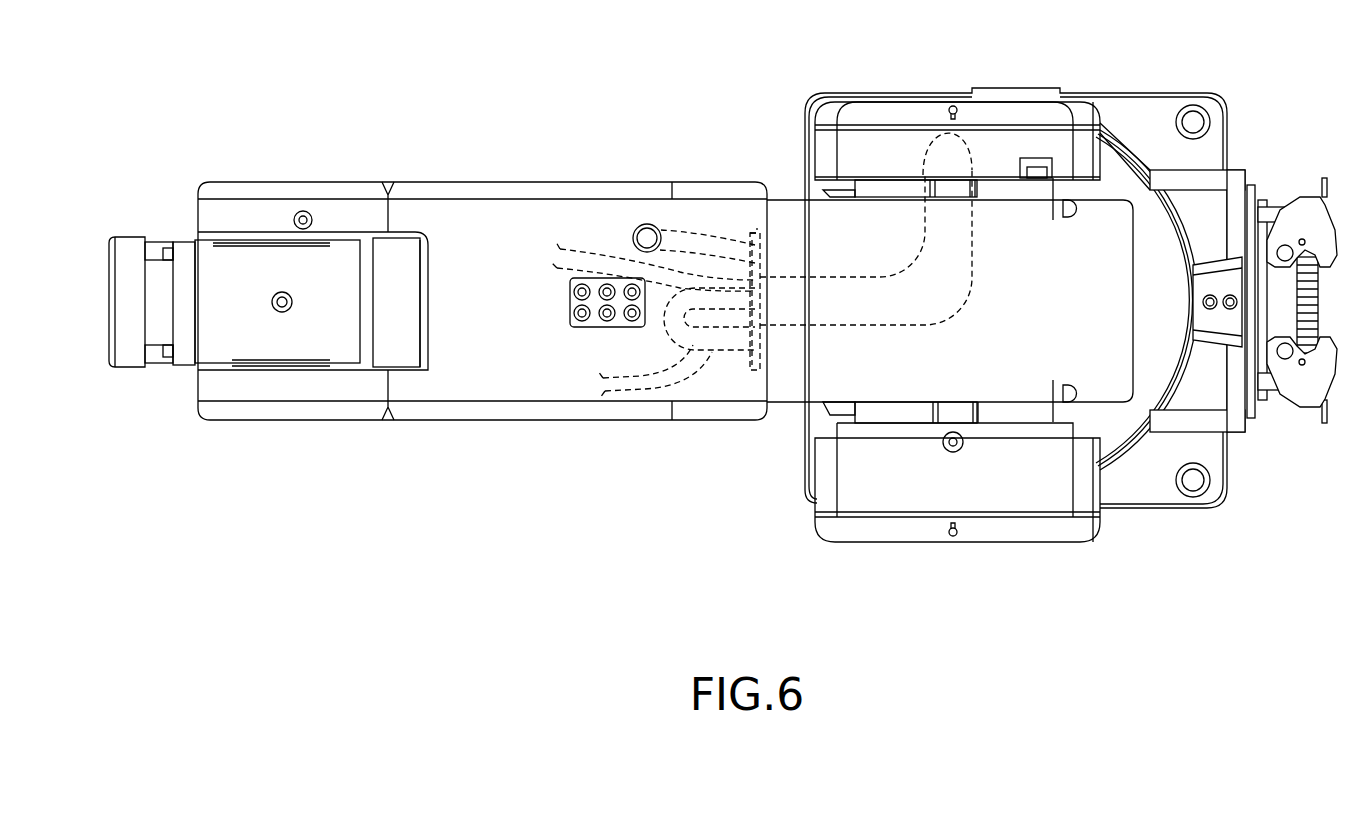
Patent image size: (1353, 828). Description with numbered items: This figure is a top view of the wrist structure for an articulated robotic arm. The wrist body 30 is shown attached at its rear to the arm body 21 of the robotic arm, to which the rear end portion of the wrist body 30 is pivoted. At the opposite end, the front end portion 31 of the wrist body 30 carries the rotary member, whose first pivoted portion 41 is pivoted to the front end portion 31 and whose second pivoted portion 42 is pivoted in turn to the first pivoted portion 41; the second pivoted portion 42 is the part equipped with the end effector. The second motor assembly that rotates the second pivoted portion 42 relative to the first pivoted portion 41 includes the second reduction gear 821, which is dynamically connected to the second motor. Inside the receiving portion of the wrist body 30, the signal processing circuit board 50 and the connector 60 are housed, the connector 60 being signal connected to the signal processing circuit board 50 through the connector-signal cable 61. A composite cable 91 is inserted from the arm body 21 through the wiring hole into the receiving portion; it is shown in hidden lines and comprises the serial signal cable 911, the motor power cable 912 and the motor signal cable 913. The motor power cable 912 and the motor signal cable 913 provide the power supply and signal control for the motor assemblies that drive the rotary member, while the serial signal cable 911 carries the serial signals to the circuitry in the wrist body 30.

The arm body 21 is at (900, 383).
The wrist body 30 is at (451, 172).
The front end portion 31 is at (316, 189).
The first pivoted portion 41 is at (267, 262).
The second pivoted portion 42 is at (127, 355).
The second reduction gear 821 is at (156, 258).
The motor power cable 912 is at (577, 245).
The connector 60 is at (648, 230).
The connector-signal cable 61 is at (720, 247).
The signal processing circuit board 50 is at (757, 232).
The composite cable 91 is at (938, 275).
The motor signal cable 913 is at (620, 387).
The serial signal cable 911 is at (733, 345).